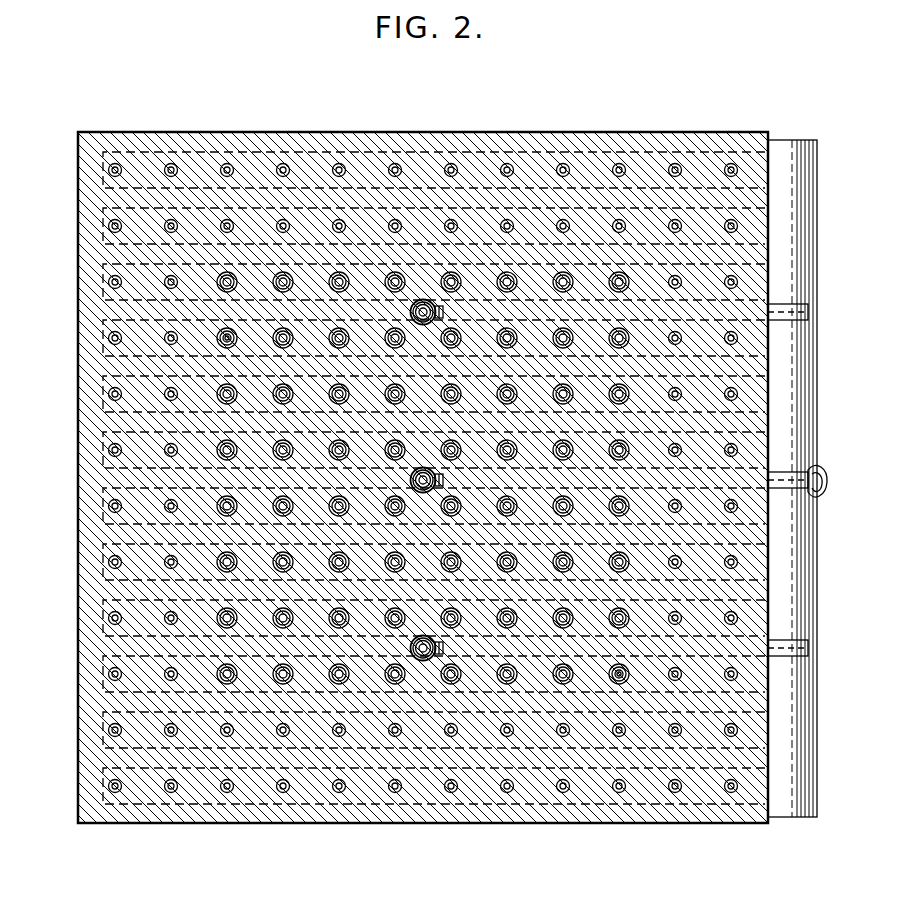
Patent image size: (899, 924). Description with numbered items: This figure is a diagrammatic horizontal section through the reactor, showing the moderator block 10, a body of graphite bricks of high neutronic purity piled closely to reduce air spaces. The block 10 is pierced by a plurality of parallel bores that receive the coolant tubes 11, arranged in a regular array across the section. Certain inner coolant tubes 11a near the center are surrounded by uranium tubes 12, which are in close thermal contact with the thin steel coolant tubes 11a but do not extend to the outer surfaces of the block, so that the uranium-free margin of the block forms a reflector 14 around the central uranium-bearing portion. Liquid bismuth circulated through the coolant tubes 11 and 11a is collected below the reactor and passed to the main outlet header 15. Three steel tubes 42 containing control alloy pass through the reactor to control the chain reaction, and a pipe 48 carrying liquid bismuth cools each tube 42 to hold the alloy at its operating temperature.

The moderator block 10 is at (483, 168).
The coolant tubes 11 is at (118, 166).
The inner coolant tubes 11a is at (517, 275).
The uranium tubes 12 is at (551, 280).
The reflector 14 is at (258, 152).
The main outlet header 15 is at (783, 142).
The steel tubes 42 is at (420, 300).
The pipe 48 is at (425, 300).